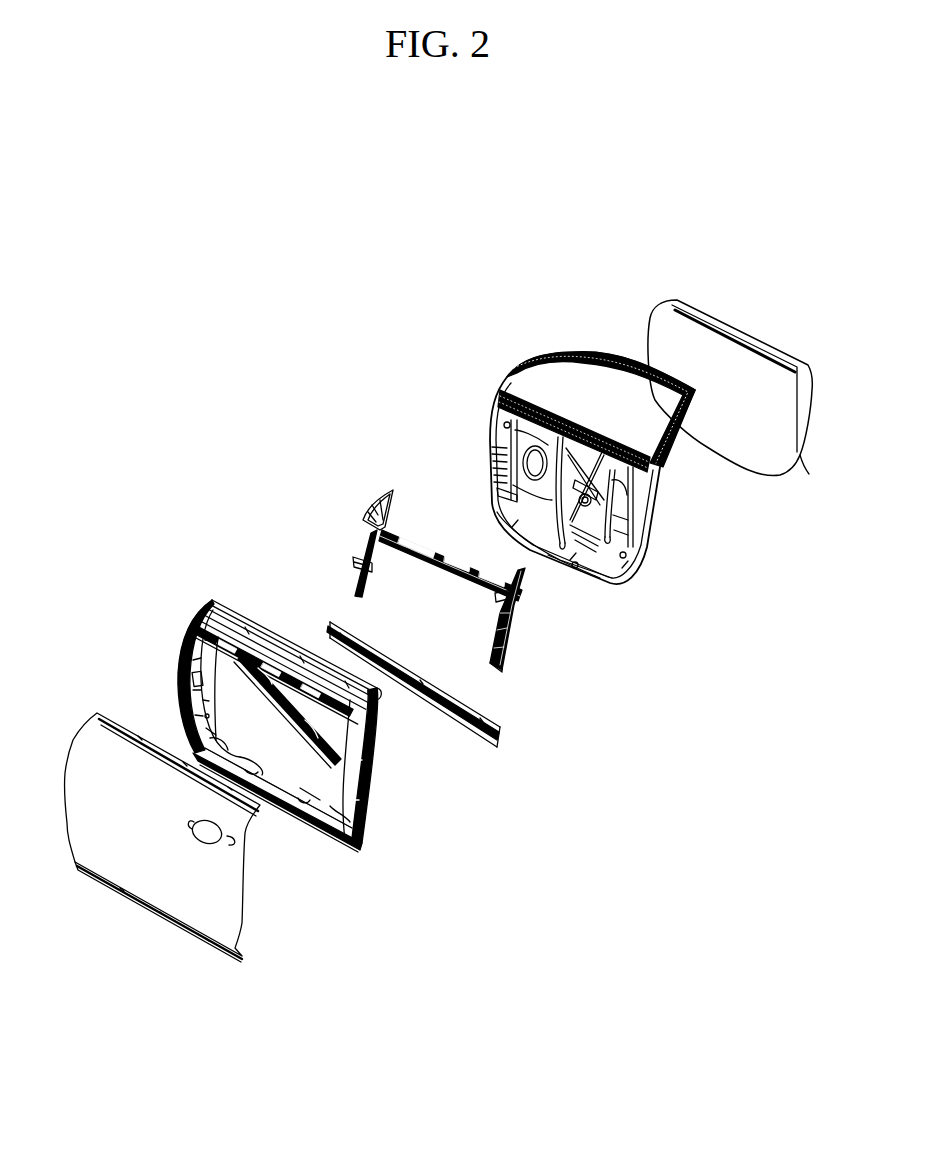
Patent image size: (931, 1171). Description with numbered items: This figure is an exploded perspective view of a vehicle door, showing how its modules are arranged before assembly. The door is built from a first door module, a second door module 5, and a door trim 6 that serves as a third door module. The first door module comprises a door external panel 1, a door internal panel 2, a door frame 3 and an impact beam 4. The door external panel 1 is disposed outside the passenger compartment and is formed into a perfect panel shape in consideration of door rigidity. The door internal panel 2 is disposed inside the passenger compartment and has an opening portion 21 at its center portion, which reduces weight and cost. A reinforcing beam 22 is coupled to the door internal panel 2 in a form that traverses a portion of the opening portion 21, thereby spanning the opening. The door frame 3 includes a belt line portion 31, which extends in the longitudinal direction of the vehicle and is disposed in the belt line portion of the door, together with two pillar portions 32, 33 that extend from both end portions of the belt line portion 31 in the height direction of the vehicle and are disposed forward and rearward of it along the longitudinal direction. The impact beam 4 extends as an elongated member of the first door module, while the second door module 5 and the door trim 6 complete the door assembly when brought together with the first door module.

The door external panel 1 is at (170, 897).
The door internal panel 2 is at (301, 744).
The opening portion 21 is at (295, 768).
The reinforcing beam 22 is at (317, 733).
The door frame 3 is at (436, 555).
The belt line portion 31 is at (435, 550).
The pillar portion 32 is at (377, 500).
The pillar portion 33 is at (530, 583).
The impact beam 4 is at (467, 702).
The second door module 5 is at (500, 422).
The door trim 6 is at (690, 328).